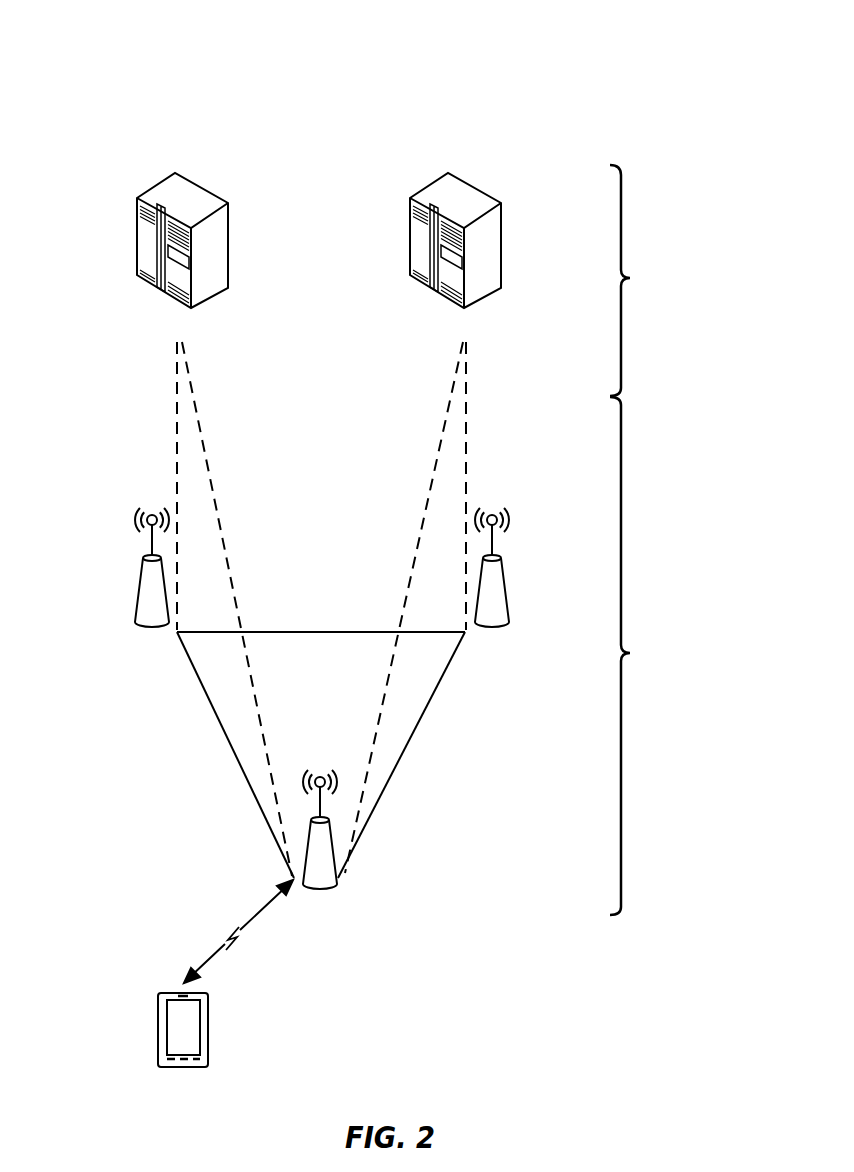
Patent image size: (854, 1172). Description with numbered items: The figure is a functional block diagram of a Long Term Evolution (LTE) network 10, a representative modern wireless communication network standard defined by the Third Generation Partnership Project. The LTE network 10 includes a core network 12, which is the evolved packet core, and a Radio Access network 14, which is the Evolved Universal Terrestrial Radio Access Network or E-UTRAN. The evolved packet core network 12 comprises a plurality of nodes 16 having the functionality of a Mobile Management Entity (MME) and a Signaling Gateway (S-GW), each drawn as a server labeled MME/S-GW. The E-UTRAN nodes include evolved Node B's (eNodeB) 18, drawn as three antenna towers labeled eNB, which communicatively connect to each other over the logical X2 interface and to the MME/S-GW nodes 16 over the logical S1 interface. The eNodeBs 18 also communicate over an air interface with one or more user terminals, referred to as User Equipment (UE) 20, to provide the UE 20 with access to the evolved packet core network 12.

The LTE network 10 is at (470, 113).
The core network 12 is at (137, 172).
The Radio Access network 14 is at (143, 497).
The nodes 16 is at (229, 222).
The evolved Node B 18 is at (140, 585).
The User Equipment 20 is at (158, 993).